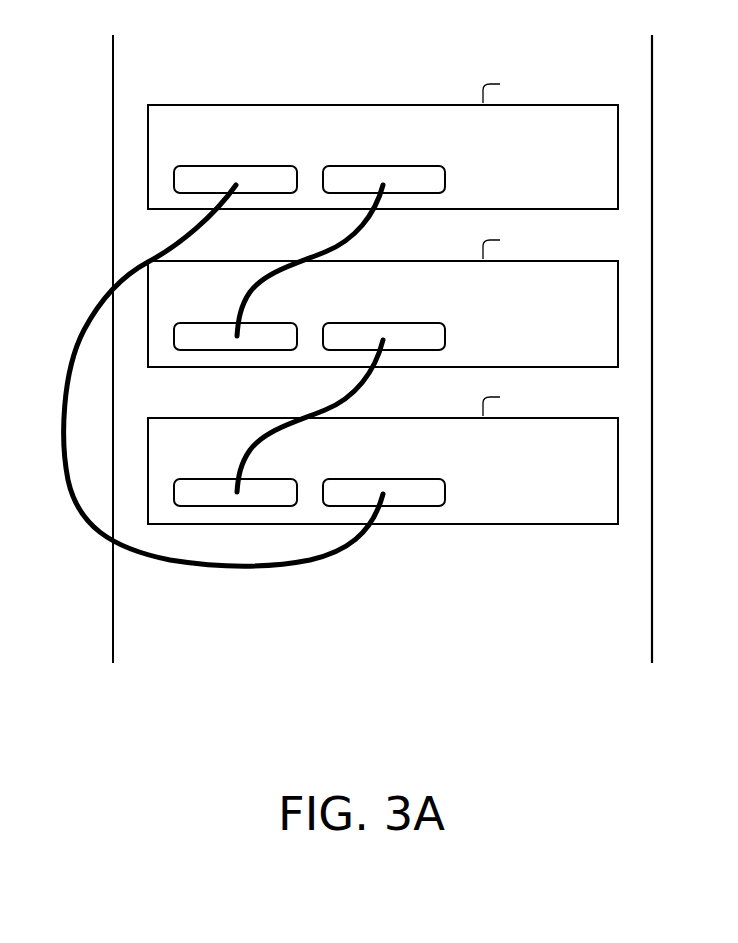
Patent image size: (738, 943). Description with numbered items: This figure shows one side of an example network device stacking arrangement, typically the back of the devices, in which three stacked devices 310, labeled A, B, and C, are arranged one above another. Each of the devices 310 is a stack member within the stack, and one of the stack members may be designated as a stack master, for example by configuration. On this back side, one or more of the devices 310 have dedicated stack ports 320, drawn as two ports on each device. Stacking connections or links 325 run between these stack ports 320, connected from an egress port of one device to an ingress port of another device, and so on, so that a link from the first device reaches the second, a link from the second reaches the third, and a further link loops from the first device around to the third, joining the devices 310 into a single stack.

The stacked devices 310 is at (622, 262).
The dedicated stack ports 320 is at (287, 165).
The stacking connections/links 325 is at (201, 224).